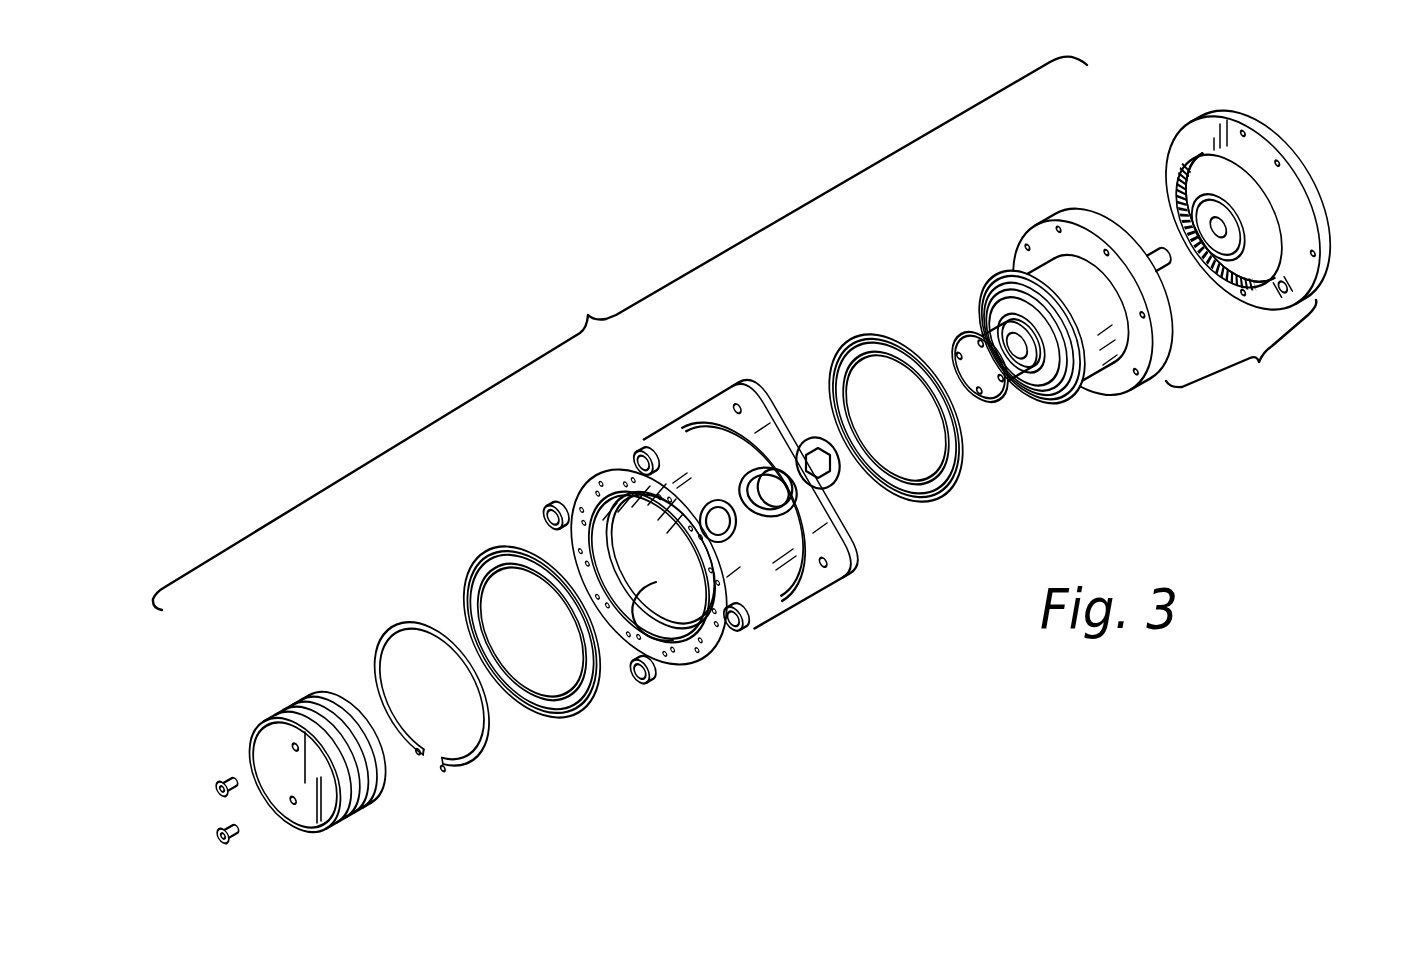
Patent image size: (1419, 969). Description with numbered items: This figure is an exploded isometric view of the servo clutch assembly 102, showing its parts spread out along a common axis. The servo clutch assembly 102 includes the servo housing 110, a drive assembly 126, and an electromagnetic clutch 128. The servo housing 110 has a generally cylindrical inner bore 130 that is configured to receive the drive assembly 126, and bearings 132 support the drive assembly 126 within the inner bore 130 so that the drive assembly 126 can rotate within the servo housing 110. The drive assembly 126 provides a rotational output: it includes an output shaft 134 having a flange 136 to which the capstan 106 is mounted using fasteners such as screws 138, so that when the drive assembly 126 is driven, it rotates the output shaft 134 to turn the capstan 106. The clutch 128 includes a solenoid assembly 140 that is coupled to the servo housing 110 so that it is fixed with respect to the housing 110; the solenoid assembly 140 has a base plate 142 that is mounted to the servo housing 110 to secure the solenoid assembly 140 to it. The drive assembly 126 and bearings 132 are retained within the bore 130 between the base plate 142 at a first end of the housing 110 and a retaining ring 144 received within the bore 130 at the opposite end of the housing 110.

The servo clutch assembly 102 is at (620, 333).
The capstan 106 is at (288, 712).
The servo housing 110 is at (735, 638).
The drive assembly 126 is at (1098, 385).
The electromagnetic clutch 128 is at (1241, 346).
The inner bore 130 is at (676, 650).
The bearings 132 is at (483, 552).
The output shaft 134 is at (1021, 364).
The flange 136 is at (950, 342).
The screws 138 is at (212, 840).
The solenoid assembly 140 is at (1166, 113).
The base plate 142 is at (1290, 155).
The retaining ring 144 is at (410, 627).